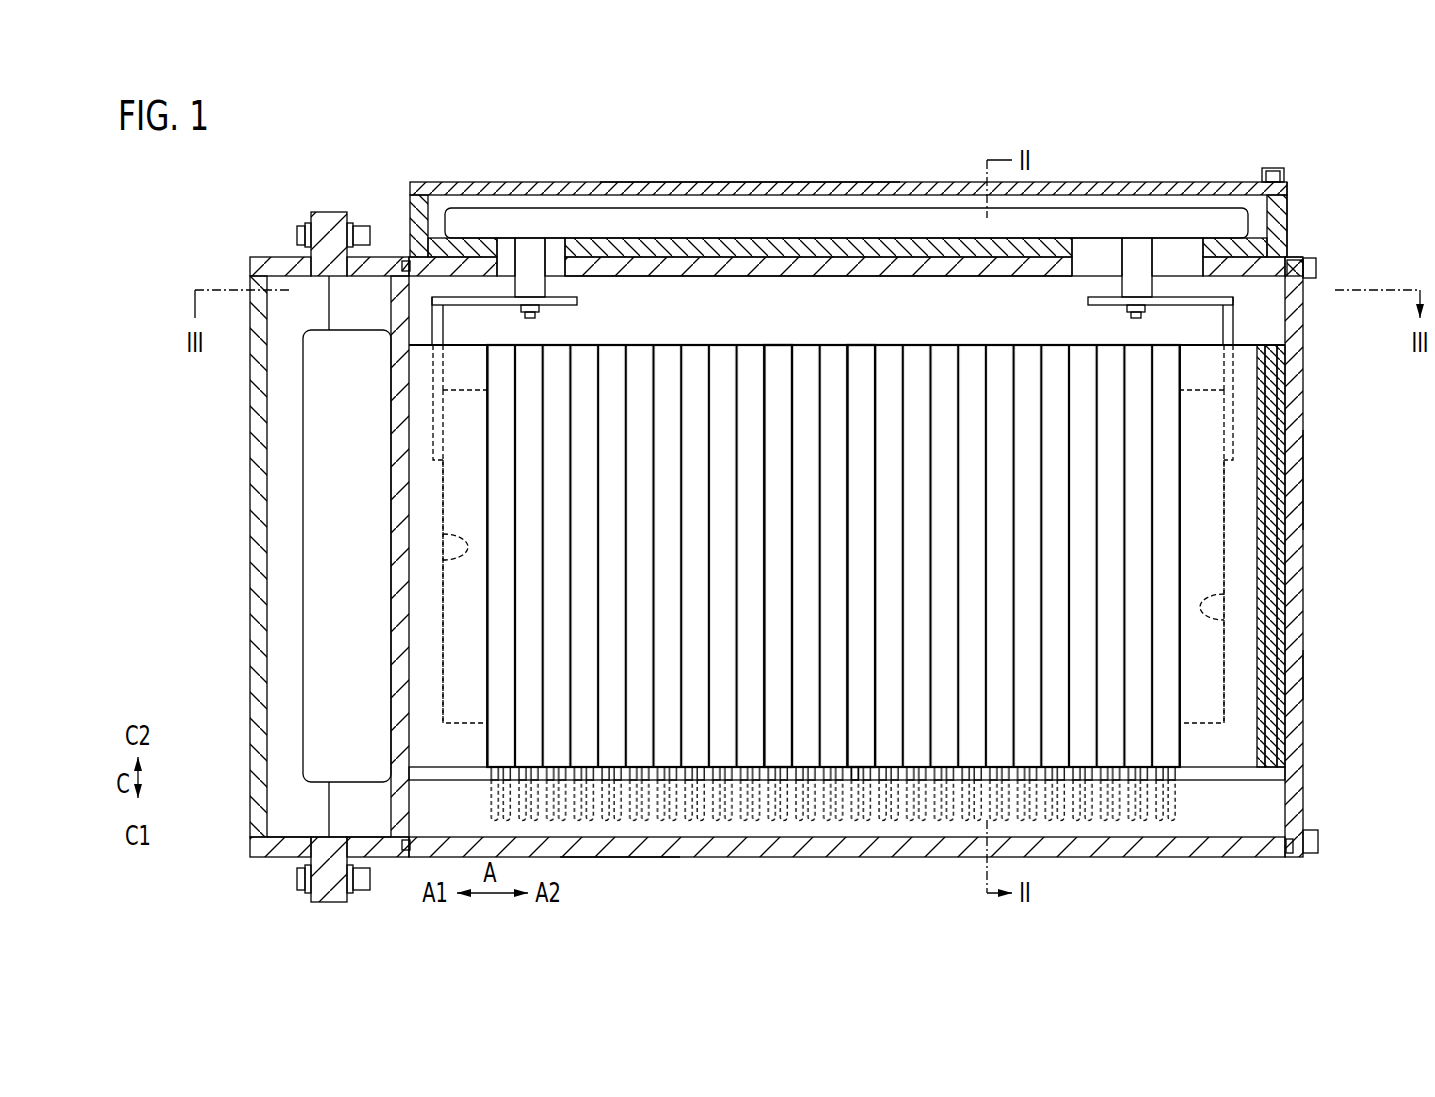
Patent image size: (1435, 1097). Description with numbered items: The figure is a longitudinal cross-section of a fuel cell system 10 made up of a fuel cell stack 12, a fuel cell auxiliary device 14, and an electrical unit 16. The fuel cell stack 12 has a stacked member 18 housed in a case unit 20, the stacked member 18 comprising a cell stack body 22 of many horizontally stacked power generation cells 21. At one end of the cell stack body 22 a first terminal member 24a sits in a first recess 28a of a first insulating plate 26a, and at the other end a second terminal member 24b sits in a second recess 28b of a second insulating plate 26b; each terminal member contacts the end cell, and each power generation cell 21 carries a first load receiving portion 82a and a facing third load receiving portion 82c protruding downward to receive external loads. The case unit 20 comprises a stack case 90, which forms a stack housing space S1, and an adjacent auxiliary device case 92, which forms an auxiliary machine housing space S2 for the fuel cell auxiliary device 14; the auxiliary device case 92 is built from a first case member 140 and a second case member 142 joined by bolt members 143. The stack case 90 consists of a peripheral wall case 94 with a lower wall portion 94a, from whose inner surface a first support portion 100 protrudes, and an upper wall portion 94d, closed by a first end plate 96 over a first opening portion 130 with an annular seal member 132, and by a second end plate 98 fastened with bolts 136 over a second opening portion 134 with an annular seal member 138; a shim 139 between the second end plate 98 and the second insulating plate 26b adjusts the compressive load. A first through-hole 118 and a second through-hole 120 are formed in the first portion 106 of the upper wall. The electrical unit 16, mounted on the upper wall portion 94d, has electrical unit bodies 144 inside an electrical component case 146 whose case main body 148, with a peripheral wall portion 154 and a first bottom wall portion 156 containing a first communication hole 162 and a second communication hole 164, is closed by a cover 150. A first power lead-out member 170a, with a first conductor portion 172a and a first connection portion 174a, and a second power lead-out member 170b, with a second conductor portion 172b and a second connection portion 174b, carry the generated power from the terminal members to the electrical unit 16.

The fuel cell system 10 is at (1416, 122).
The fuel cell stack 12 is at (1322, 258).
The fuel cell auxiliary device 14 is at (303, 457).
The electrical unit 16 is at (1302, 170).
The stacked member 18 is at (826, 320).
The case unit 20 is at (1310, 672).
The power generation cell 21 is at (778, 355).
The cell stack body 22 is at (856, 344).
The first terminal member 24a is at (443, 513).
The second terminal member 24b is at (1224, 565).
The first insulating plate 26a is at (437, 650).
The second insulating plate 26b is at (1240, 742).
The first recess 28a is at (440, 560).
The second recess 28b is at (1248, 615).
The first load receiving portion 82a is at (822, 822).
The third load receiving portion 82c is at (850, 822).
The stack case 90 is at (1306, 502).
The auxiliary device case 92 is at (248, 262).
The peripheral wall case 94 is at (678, 857).
The lower wall portion 94a is at (615, 857).
The upper wall portion 94d is at (705, 265).
The first end plate 96 is at (402, 803).
The second end plate 98 is at (1305, 455).
The first support portion 100 is at (1270, 805).
The first portion 106 is at (773, 265).
The first through-hole 118 is at (555, 258).
The second through-hole 120 is at (1088, 262).
The first opening portion 130 is at (409, 292).
The annular seal member 132 is at (401, 260).
The second opening portion 134 is at (1290, 303).
The bolts 136 is at (1320, 843).
The annular seal member 138 is at (1300, 268).
The shim 139 is at (1270, 425).
The first case member 140 is at (344, 212).
The second case member 142 is at (251, 405).
The bolt members 143 is at (297, 231).
The electrical unit bodies 144 is at (640, 207).
The electrical component case 146 is at (950, 180).
The case main body 148 is at (1290, 198).
The cover 150 is at (914, 182).
The peripheral wall portion 154 is at (1282, 233).
The first bottom wall portion 156 is at (746, 248).
The first communication hole 162 is at (508, 245).
The second communication hole 164 is at (1110, 247).
The first power lead-out member 170a is at (585, 307).
The second power lead-out member 170b is at (1085, 308).
The first conductor portion 172a is at (577, 300).
The second conductor portion 172b is at (1088, 300).
The first connection portion 174a is at (532, 250).
The second connection portion 174b is at (1140, 250).
The stack housing space S1 is at (1272, 330).
The auxiliary machine housing space S2 is at (283, 803).